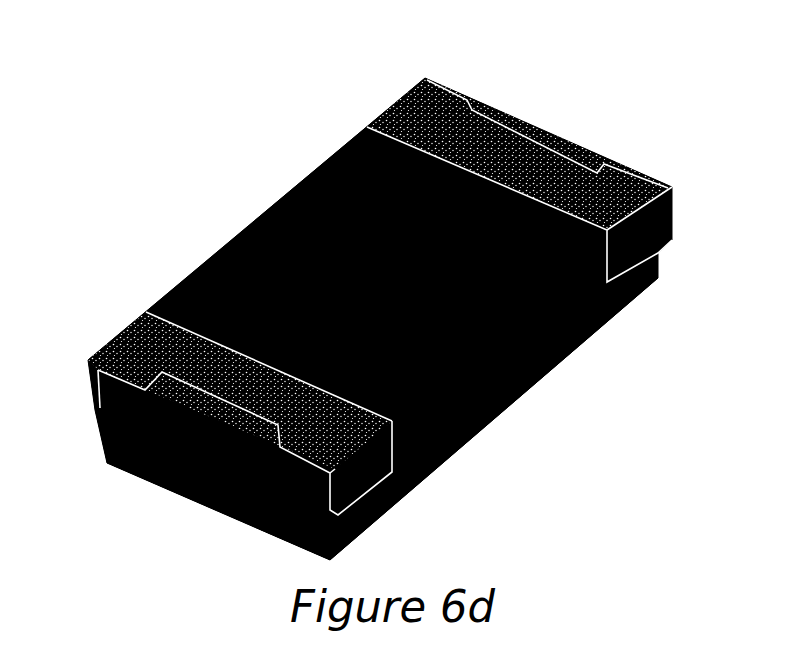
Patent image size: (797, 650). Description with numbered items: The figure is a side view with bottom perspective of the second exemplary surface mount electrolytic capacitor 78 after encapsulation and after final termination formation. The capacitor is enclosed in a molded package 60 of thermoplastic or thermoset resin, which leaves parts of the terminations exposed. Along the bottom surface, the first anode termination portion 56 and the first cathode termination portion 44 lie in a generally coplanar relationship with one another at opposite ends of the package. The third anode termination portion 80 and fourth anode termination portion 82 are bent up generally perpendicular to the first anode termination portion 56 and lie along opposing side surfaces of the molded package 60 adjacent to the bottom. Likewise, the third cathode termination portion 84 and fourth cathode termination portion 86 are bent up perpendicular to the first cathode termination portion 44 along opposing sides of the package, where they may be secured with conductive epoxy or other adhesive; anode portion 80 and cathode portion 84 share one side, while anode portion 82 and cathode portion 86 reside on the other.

The electrolytic capacitor embodiment 78 is at (657, 100).
The molded package 60 is at (522, 397).
The third cathode termination portion 84 is at (335, 138).
The third anode termination portion 80 is at (97, 376).
The fourth anode termination portion 82 is at (397, 490).
The fourth cathode termination portion 86 is at (672, 217).
The first anode termination portion 56 is at (143, 343).
The first cathode termination portion 44 is at (390, 105).